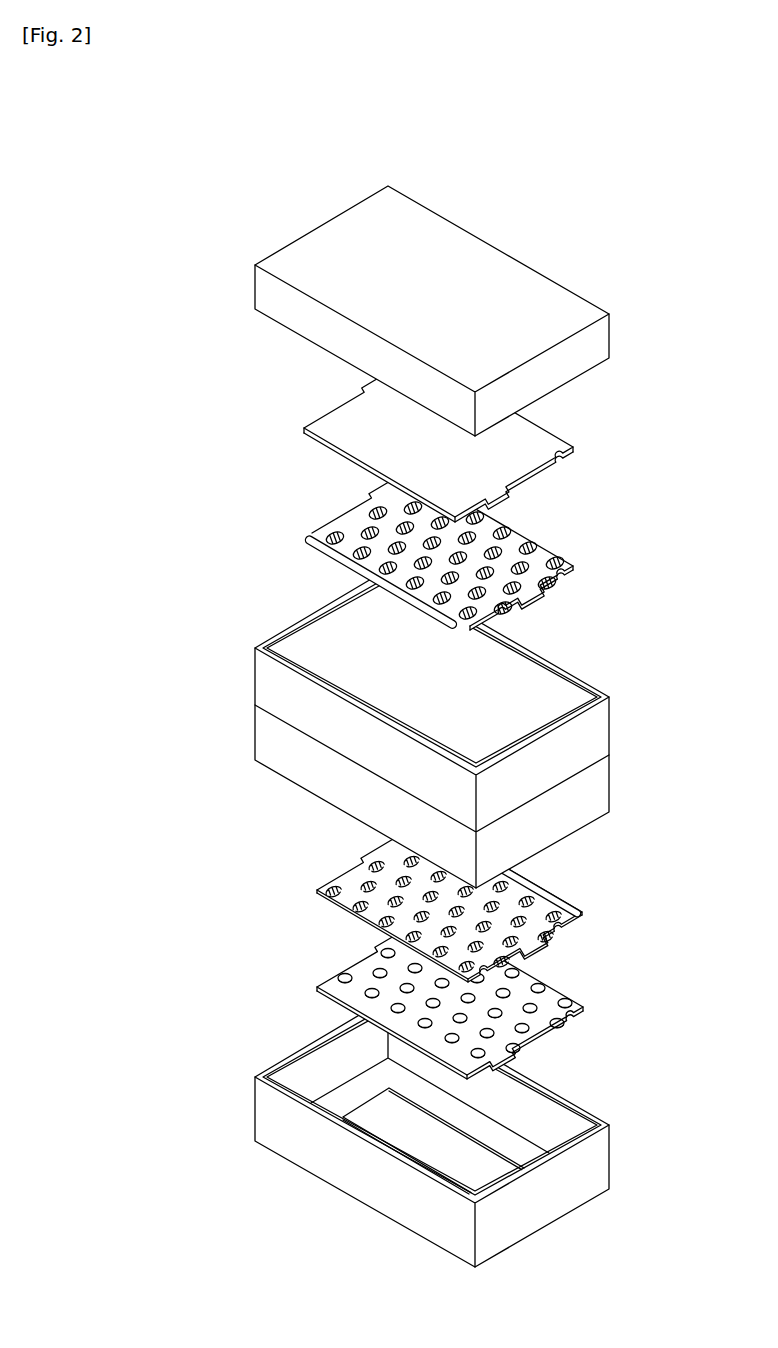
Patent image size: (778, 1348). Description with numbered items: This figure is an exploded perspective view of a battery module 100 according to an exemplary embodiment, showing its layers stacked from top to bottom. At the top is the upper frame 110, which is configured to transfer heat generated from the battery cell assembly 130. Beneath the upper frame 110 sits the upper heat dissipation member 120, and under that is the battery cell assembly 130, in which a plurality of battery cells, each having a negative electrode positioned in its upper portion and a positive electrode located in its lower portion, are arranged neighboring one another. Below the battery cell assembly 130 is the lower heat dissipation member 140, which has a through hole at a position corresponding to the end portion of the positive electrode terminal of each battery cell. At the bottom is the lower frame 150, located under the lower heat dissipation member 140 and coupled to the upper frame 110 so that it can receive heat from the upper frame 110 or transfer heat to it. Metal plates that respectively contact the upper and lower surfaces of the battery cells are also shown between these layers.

The battery module 100 is at (241, 209).
The upper frame 110 is at (595, 341).
The upper heat dissipation member 120 is at (537, 433).
The battery cell assembly 130 is at (598, 728).
The lower heat dissipation member 140 is at (553, 993).
The lower frame 150 is at (602, 1152).